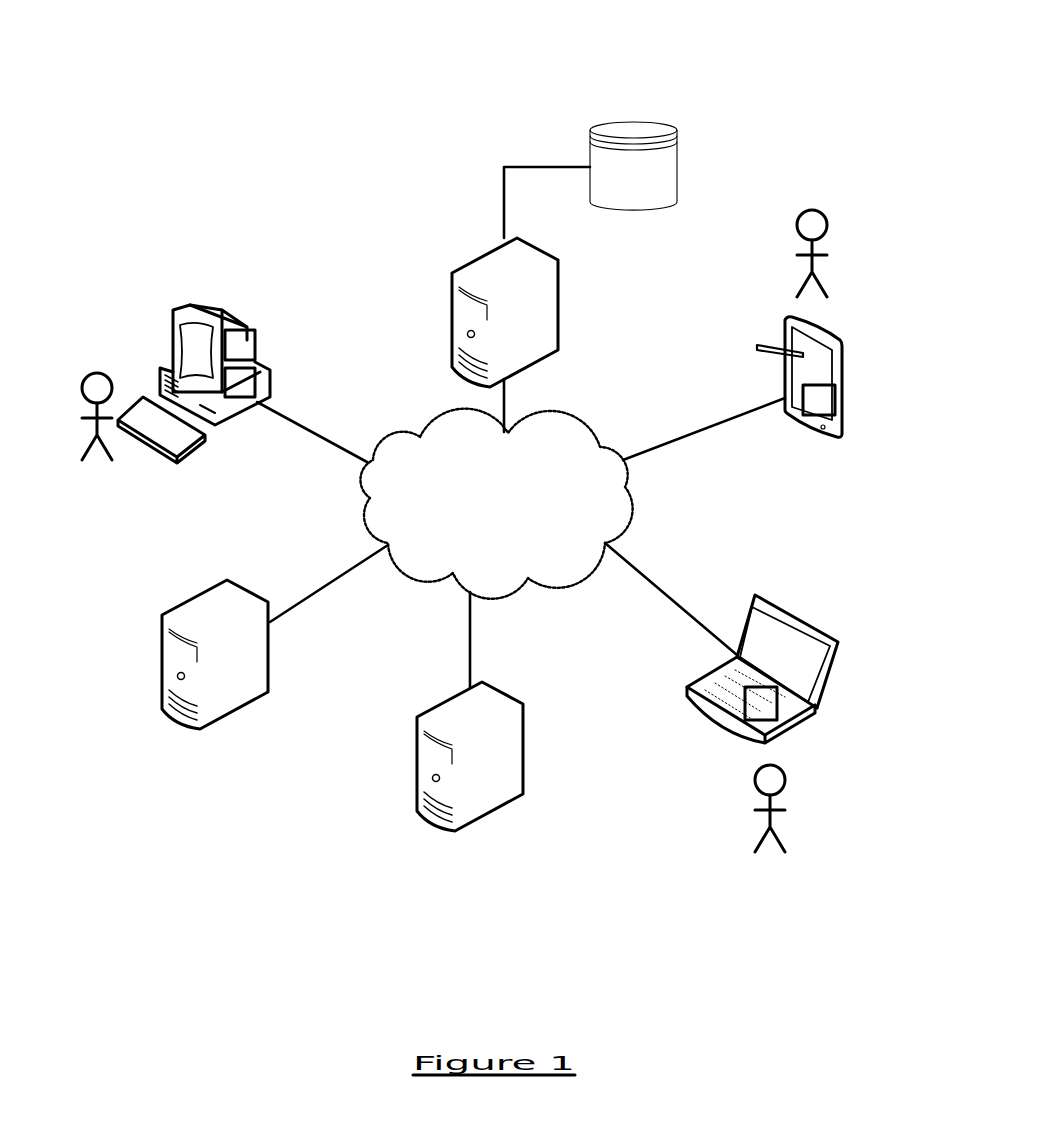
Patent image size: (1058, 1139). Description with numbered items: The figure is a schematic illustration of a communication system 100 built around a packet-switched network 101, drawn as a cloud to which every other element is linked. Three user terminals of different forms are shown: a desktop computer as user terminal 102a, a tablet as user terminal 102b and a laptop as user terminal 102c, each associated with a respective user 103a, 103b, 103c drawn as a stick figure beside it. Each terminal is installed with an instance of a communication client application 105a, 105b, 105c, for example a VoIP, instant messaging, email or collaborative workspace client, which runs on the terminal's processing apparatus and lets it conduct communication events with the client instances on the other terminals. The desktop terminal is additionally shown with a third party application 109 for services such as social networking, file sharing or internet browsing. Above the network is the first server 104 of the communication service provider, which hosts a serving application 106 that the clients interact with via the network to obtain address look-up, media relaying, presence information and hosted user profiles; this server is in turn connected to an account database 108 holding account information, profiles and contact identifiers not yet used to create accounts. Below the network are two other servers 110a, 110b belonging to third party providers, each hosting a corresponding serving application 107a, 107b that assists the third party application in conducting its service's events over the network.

The communication system 100 is at (328, 108).
The network 101 is at (362, 522).
The user terminal 102a is at (227, 317).
The user terminal 102b is at (785, 375).
The user terminal 102c is at (710, 717).
The user 103a is at (97, 372).
The user 103b is at (828, 222).
The user 103c is at (786, 778).
The first server 104 is at (467, 263).
The communication client application 105a is at (255, 338).
The communication client application 105b is at (835, 395).
The communication client application 105c is at (810, 711).
The serving application 106 is at (558, 308).
The serving application 107a is at (269, 650).
The serving application 107b is at (523, 760).
The account database 108 is at (677, 155).
The third party application 109 is at (257, 372).
The other server 110a is at (163, 655).
The other server 110b is at (417, 757).